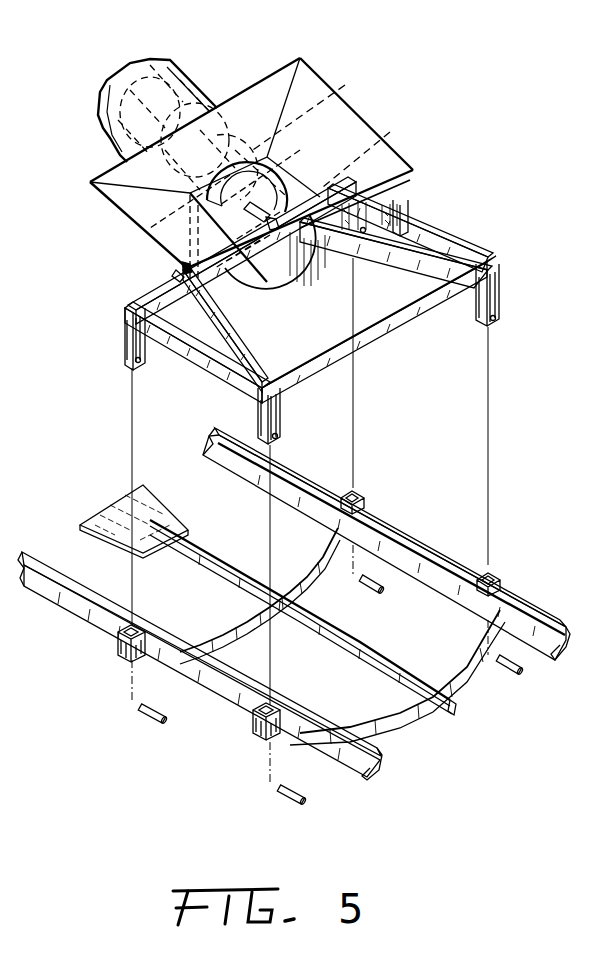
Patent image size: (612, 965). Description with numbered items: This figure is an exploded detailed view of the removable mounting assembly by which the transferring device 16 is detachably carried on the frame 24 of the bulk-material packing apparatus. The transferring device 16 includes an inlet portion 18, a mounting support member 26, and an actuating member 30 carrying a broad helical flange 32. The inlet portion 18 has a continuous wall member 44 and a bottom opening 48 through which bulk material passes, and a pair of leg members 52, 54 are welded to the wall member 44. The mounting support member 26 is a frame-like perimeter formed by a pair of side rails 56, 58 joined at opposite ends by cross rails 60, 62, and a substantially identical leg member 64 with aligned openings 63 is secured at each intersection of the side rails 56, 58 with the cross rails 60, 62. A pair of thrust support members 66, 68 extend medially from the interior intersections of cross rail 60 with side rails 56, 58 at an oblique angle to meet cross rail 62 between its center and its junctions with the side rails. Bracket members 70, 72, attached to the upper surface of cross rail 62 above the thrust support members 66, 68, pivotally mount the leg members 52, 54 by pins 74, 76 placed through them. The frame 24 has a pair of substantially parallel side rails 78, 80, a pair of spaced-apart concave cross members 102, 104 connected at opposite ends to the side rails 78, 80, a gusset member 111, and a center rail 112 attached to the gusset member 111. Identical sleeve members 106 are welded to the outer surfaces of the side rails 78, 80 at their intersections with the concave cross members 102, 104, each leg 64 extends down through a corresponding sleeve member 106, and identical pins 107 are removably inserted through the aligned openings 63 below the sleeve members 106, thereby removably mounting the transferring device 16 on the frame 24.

The transferring device 16 is at (233, 171).
The inlet portion 18 is at (243, 151).
The frame 24 is at (294, 641).
The mounting support member 26 is at (322, 313).
The actuating member 30 is at (290, 263).
The broad helical flange 32 is at (113, 100).
The continuous wall member 44 is at (307, 80).
The bottom opening 48 is at (317, 175).
The leg member 52 is at (180, 227).
The leg member 54 is at (340, 87).
The side rail 56 is at (213, 370).
The side rail 58 is at (442, 255).
The cross rail 60 is at (493, 262).
The cross rail 62 is at (147, 296).
The aligned openings 63 is at (138, 360).
The leg member 64 is at (127, 335).
The thrust support member 66 is at (253, 353).
The thrust support member 68 is at (453, 272).
The bracket member 70 is at (187, 266).
The bracket member 72 is at (390, 132).
The pin 74 is at (180, 276).
The pin 76 is at (400, 153).
The side rail 78 is at (235, 692).
The side rail 80 is at (387, 533).
The concave cross member 102 is at (373, 705).
The concave cross member 104 is at (313, 563).
The sleeve member 106 is at (118, 645).
The pin 107 is at (150, 715).
The gusset member 111 is at (167, 507).
The center rail 112 is at (370, 647).